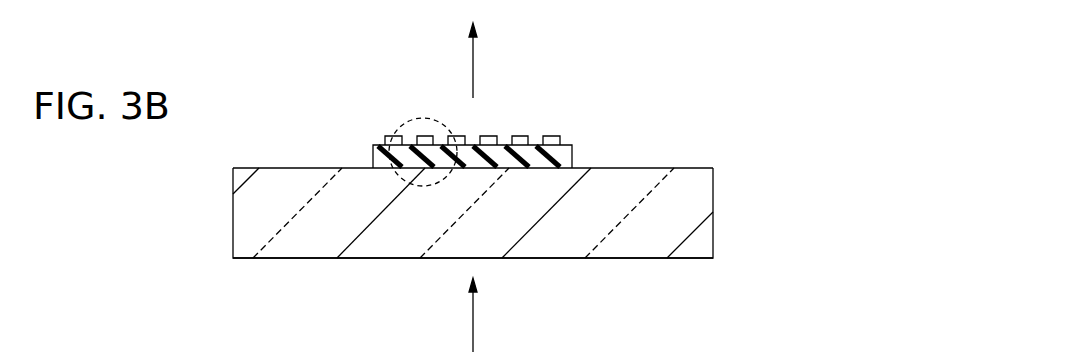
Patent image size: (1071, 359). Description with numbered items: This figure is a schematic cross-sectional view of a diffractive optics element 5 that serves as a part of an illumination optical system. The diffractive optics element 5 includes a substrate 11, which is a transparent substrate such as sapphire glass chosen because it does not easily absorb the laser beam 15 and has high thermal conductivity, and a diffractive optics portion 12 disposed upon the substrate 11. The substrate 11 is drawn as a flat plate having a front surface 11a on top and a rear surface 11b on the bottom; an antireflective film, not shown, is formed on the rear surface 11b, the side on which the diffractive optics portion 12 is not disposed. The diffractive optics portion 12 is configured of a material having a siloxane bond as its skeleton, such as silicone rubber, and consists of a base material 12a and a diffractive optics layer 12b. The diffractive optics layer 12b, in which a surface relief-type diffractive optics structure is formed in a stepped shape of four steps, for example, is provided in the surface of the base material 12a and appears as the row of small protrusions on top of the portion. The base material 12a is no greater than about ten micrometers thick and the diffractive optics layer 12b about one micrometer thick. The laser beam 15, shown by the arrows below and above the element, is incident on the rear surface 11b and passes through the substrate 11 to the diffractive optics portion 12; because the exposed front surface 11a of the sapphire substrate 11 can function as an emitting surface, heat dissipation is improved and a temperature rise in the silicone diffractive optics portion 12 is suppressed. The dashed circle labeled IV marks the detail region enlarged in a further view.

The diffractive optics element 5 is at (733, 93).
The substrate 11 is at (706, 211).
The front surface 11a is at (292, 167).
The rear surface 11b is at (285, 259).
The diffractive optics portion 12 is at (552, 126).
The base material 12a is at (573, 156).
The diffractive optics layer 12b is at (515, 135).
The laser beam 15 is at (475, 52).
The detail region IV is at (413, 119).